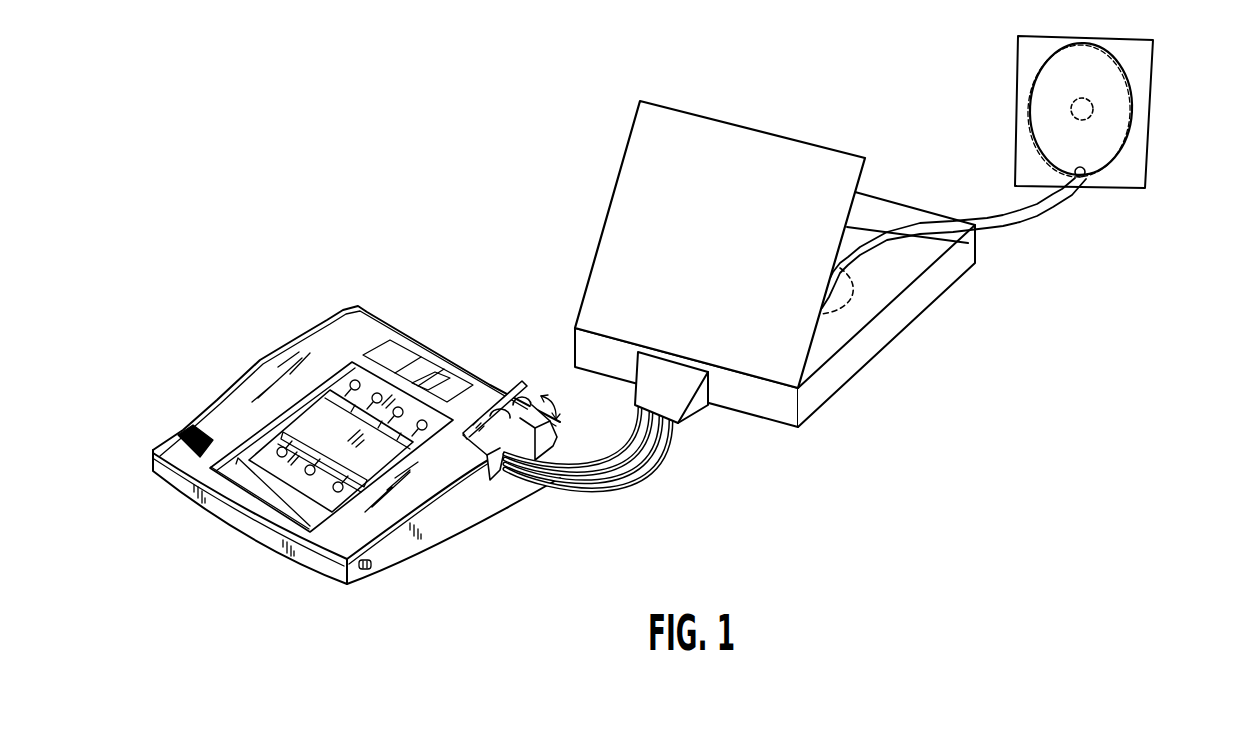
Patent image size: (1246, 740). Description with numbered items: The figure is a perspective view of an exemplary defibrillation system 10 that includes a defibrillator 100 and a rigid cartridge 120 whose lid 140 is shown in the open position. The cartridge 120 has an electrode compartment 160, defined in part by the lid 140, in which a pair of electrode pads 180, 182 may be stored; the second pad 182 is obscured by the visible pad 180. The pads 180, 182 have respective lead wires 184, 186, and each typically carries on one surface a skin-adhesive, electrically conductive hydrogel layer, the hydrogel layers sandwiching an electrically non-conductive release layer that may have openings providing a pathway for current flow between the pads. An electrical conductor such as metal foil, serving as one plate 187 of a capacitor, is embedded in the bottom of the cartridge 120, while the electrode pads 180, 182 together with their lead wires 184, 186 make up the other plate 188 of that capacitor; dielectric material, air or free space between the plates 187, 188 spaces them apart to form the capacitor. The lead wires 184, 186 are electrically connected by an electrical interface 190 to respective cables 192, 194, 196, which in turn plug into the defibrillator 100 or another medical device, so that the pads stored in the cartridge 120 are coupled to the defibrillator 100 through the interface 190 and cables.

The defibrillation system 10 is at (1069, 393).
The defibrillator 100 is at (468, 335).
The rigid cartridge 120 is at (827, 400).
The lid 140 is at (733, 130).
The electrode compartment 160 is at (941, 242).
The electrode pad 180 is at (1138, 168).
The electrode pad 182 is at (1113, 188).
The lead wire 184 is at (1050, 212).
The lead wire 186 is at (982, 213).
The capacitor plate 187 is at (856, 293).
The capacitor plate 188 is at (1063, 271).
The electrical interface 190 is at (693, 418).
The cable 192 is at (640, 481).
The cable 194 is at (596, 483).
The cable 196 is at (593, 463).